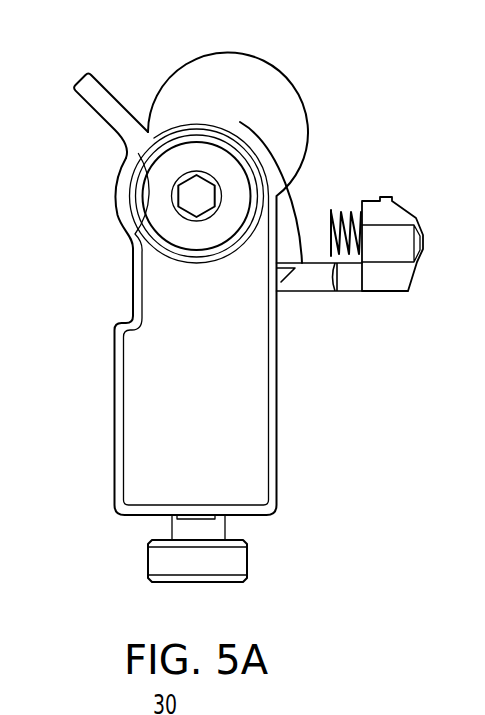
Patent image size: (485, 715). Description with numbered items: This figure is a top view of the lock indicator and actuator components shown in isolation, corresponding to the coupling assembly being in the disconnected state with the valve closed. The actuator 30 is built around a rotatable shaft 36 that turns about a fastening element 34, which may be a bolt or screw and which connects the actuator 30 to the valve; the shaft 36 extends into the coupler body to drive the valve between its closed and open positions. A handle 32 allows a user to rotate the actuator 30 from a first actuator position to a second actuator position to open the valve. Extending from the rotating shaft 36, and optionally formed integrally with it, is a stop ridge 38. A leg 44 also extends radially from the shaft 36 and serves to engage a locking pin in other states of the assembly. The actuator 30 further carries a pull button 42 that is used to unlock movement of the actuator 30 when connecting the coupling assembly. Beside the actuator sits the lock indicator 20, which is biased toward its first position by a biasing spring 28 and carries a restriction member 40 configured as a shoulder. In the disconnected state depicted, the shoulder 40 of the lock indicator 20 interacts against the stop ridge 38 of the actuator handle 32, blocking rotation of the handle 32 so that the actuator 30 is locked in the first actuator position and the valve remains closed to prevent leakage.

The lock indicator 20 is at (394, 292).
The biasing spring 28 is at (340, 212).
The actuator 30 is at (214, 316).
The handle 32 is at (133, 292).
The fastening element 34 is at (211, 163).
The rotatable shaft 36 is at (116, 190).
The stop ridge 38 is at (288, 247).
The restriction member 40 is at (283, 280).
The pull button 42 is at (210, 583).
The leg 44 is at (92, 90).